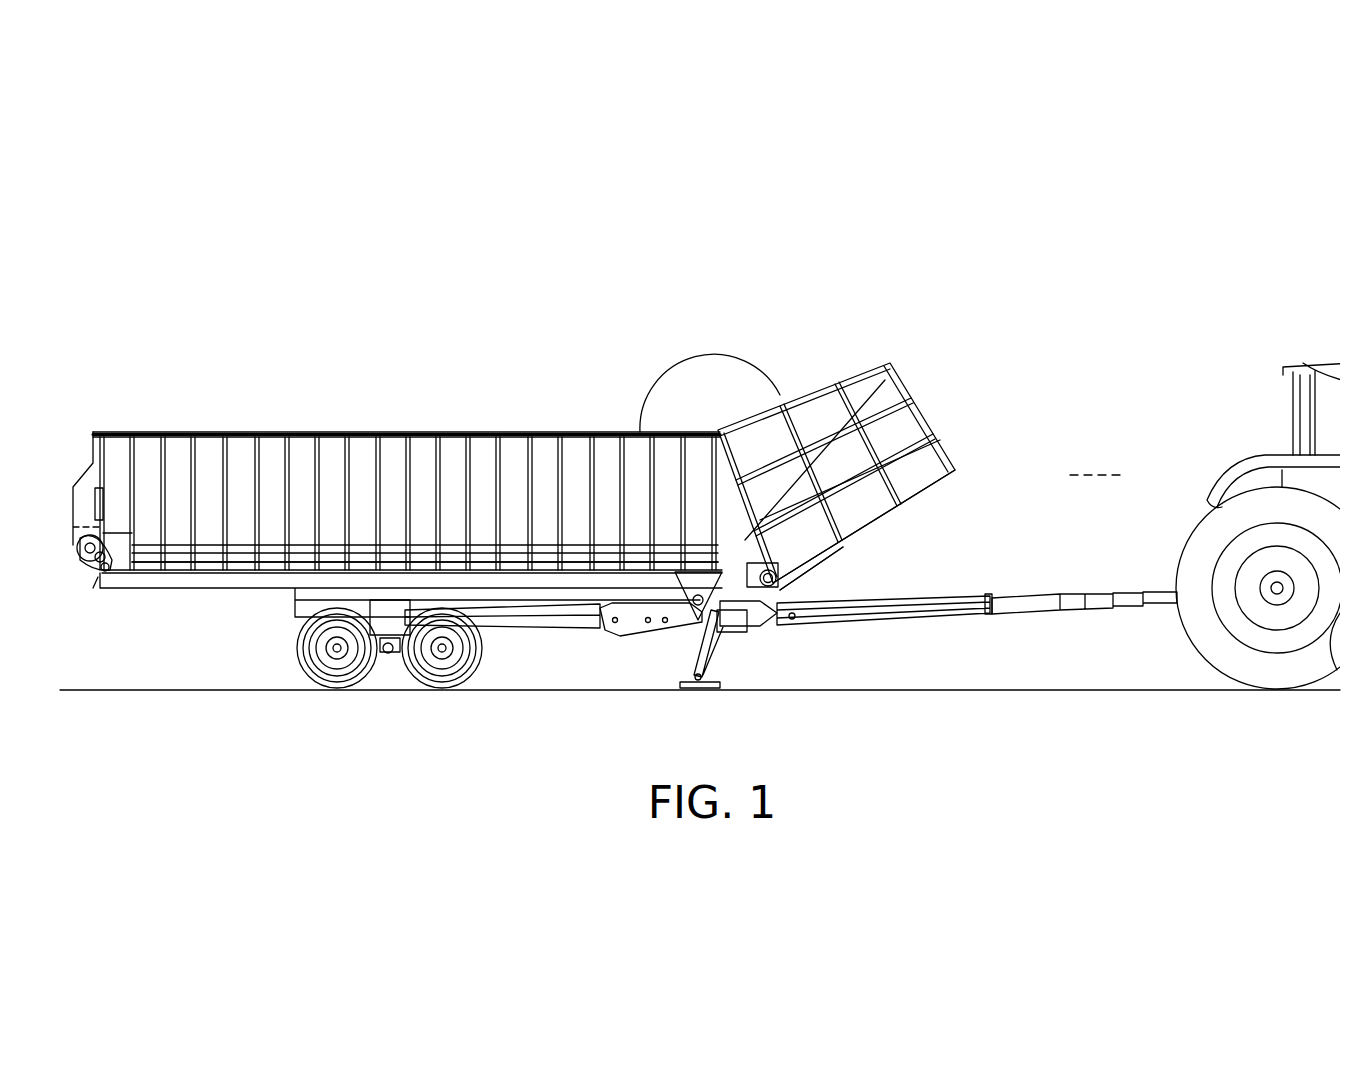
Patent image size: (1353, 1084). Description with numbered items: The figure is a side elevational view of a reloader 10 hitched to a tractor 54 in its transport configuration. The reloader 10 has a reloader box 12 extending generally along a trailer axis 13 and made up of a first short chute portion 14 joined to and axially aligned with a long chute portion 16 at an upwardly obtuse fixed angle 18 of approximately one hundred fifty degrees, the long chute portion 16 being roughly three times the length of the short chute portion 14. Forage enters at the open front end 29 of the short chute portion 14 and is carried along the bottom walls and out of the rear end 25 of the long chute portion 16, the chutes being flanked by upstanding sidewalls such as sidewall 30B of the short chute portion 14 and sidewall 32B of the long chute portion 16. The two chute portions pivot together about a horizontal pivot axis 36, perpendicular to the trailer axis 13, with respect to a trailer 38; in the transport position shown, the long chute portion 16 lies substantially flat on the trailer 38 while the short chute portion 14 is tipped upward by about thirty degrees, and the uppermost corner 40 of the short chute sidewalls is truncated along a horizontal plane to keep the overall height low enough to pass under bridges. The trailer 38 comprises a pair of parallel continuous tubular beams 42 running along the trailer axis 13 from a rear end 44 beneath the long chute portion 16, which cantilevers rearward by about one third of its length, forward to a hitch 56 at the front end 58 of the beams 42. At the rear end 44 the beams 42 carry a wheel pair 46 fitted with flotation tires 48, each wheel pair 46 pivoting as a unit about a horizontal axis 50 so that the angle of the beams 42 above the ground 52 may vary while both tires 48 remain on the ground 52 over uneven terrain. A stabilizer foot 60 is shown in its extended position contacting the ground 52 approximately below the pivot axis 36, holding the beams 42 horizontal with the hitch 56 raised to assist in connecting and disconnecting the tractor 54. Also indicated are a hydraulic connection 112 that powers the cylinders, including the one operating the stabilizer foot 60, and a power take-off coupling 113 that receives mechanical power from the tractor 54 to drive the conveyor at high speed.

The reloader 10 is at (940, 225).
The reloader box 12 is at (397, 421).
The trailer axis 13 is at (1093, 475).
The short chute portion 14 is at (847, 330).
The long chute portion 16 is at (712, 407).
The fixed angle 18 is at (698, 357).
The rear end 25 is at (77, 420).
The open front end 29 is at (863, 430).
The upstanding sidewall 30B is at (863, 437).
The upstanding sidewall 32B is at (152, 538).
The pivot axis 36 is at (785, 590).
The trailer 38 is at (638, 600).
The uppermost corner 40 is at (857, 363).
The beams 42 is at (560, 620).
The rear end 44 is at (344, 683).
The wheel pair 46 is at (346, 684).
The flotation tires 48 is at (322, 655).
The horizontal axis 50 is at (388, 660).
The ground 52 is at (826, 690).
The tractor 54 is at (1203, 443).
The hitch 56 is at (1138, 607).
The front end 58 is at (1138, 712).
The stabilizer foot 60 is at (697, 690).
The hydraulic connection 112 is at (792, 620).
The power take-off coupling 113 is at (830, 555).